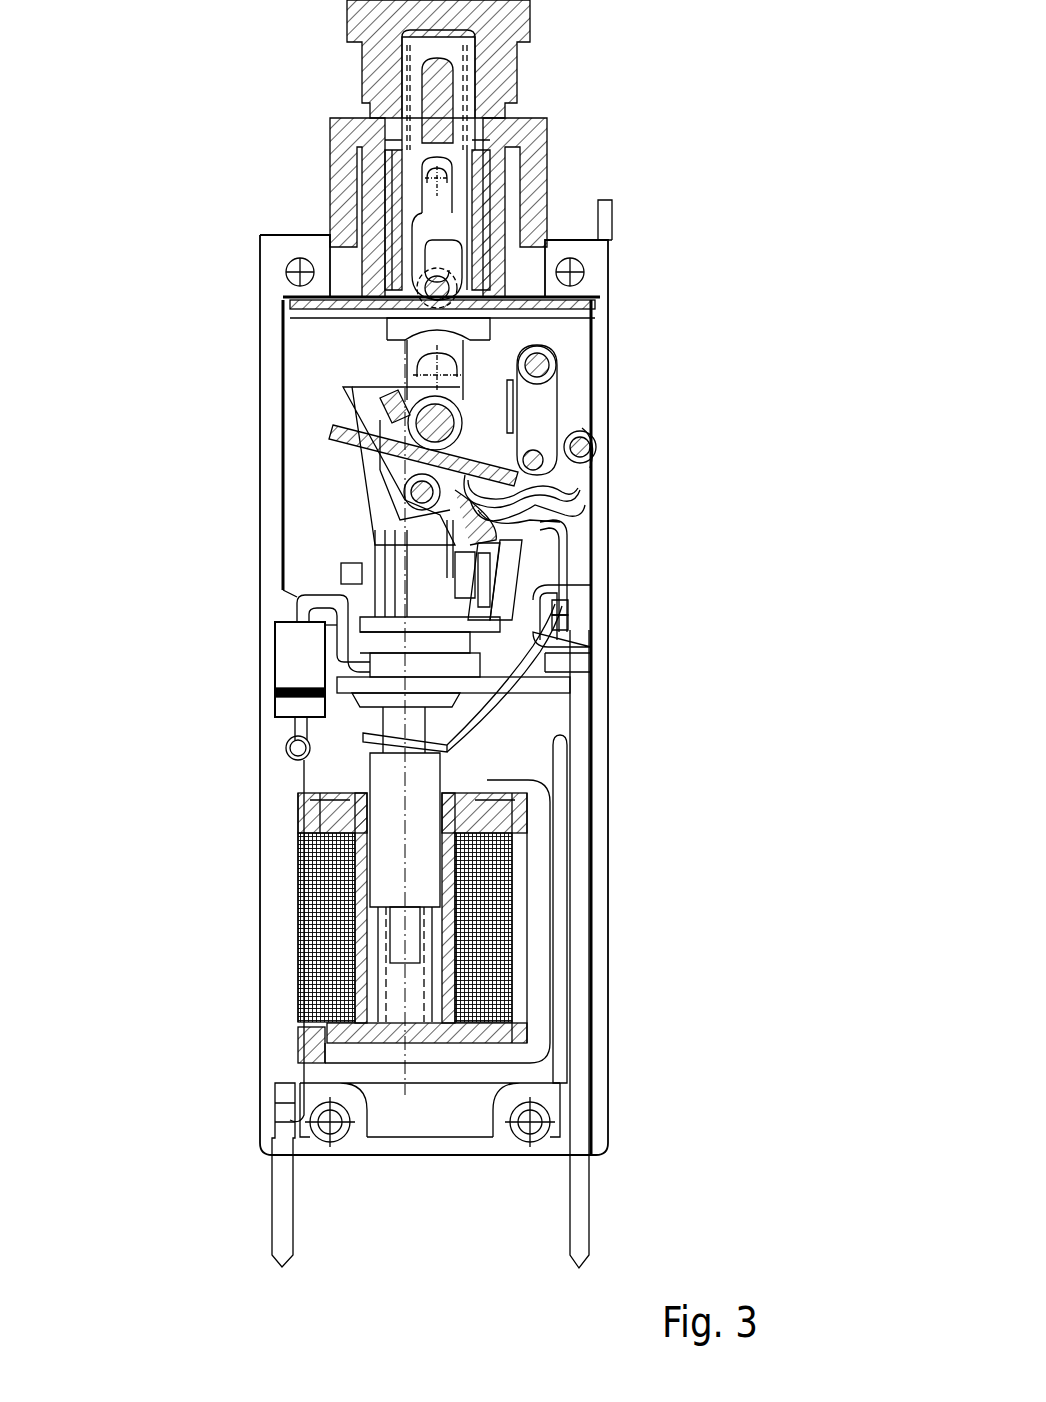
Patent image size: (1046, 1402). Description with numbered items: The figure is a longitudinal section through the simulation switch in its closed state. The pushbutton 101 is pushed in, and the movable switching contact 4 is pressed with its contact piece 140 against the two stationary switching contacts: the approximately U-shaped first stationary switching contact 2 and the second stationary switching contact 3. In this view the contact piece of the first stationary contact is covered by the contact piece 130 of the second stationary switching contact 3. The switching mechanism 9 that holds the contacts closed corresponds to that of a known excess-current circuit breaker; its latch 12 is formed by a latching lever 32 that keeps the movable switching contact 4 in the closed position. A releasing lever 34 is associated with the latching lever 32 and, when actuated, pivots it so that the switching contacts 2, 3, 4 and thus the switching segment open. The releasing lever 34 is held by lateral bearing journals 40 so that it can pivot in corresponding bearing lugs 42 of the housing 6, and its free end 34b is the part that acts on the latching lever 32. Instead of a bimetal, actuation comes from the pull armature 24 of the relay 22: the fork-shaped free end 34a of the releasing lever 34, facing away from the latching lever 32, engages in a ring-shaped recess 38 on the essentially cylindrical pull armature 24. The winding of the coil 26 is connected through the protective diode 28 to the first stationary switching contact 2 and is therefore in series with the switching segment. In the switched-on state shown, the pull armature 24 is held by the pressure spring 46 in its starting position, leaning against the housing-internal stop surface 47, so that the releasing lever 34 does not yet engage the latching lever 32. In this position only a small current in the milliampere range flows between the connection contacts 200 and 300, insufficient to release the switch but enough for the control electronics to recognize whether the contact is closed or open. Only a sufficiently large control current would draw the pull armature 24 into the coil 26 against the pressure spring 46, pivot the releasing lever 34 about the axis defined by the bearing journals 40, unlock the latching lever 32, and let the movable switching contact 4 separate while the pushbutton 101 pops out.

The pushbutton 101 is at (497, 30).
The switching mechanism 9 is at (337, 392).
The latch 12 is at (572, 420).
The free end of the releasing lever 34b is at (590, 493).
The latching lever 32 is at (565, 528).
The releasing lever 34 is at (520, 567).
The second stationary switching contact 3 is at (517, 573).
The bearing lugs 42 is at (565, 610).
The bearing journals 40 is at (563, 615).
The contact piece of the second stationary switching contact 130 is at (500, 668).
The housing-internal stop surface 47 is at (490, 703).
The ring-shaped recess 38 is at (420, 727).
The fork-shaped free end of the releasing lever 34a is at (470, 762).
The housing 6 is at (597, 920).
The movable switching contact 4 is at (470, 597).
The contact piece of the movable switching contact 140 is at (473, 617).
The protective diode 28 is at (300, 640).
The first stationary switching contact 2 is at (360, 660).
The pull armature 24 is at (385, 774).
The relay 22 is at (290, 924).
The coil 26 is at (327, 987).
The pressure spring 46 is at (427, 977).
The connection contact 200 is at (282, 1230).
The connection contact 300 is at (582, 1230).